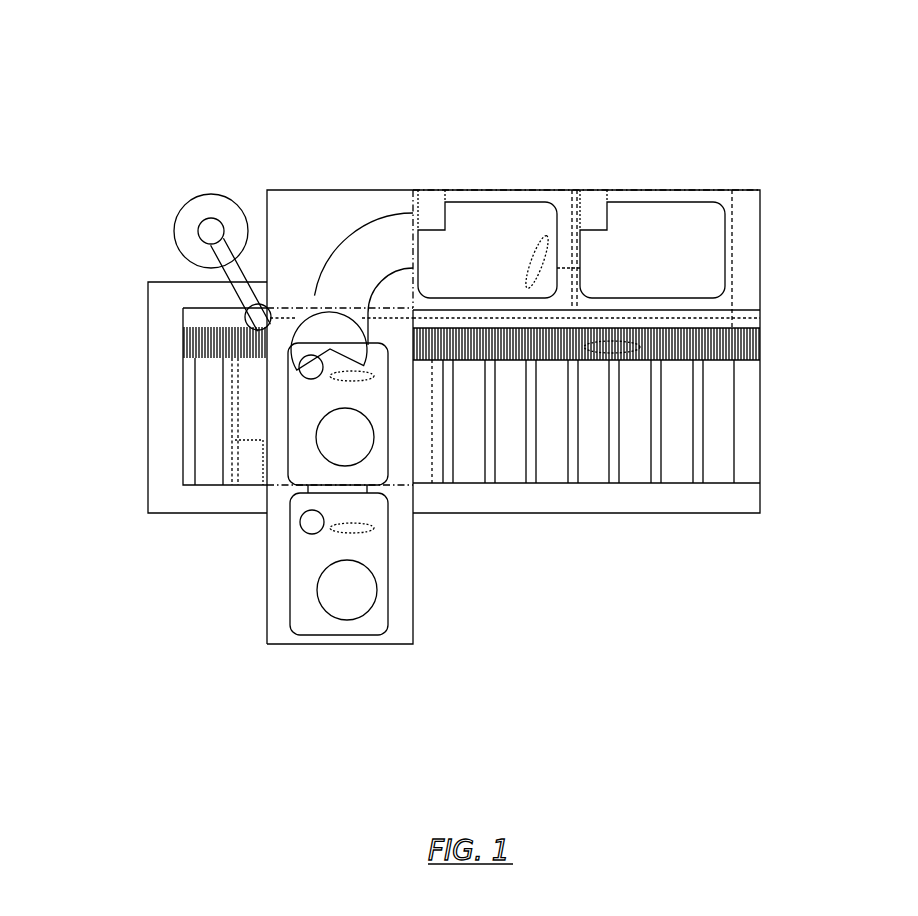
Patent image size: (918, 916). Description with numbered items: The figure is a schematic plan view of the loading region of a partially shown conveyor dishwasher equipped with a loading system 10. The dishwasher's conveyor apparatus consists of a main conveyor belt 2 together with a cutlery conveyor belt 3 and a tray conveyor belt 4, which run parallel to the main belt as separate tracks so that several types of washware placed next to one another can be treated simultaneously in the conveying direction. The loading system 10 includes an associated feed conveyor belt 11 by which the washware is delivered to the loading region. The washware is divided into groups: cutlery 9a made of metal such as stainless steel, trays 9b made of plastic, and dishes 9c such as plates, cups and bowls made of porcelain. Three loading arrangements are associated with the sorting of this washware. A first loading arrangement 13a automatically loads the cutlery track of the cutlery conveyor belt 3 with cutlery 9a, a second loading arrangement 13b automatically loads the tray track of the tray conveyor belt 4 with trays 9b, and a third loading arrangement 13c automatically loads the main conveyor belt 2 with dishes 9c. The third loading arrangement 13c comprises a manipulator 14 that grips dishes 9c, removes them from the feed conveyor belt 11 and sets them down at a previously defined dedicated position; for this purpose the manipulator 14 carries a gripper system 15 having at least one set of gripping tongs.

The loading system 10 is at (102, 211).
The feed conveyor belt 11 is at (333, 250).
The manipulator 14 is at (230, 277).
The gripper system 15 is at (323, 333).
The first loading arrangement 13a is at (568, 77).
The second loading arrangement 13b is at (728, 77).
The third loading arrangement 13c is at (277, 410).
The tray conveyor belt 4 is at (740, 317).
The cutlery conveyor belt 3 is at (743, 347).
The main conveyor belt 2 is at (777, 370).
The cutlery 9a is at (530, 247).
The trays 9b is at (475, 212).
The dishes 9c is at (312, 522).